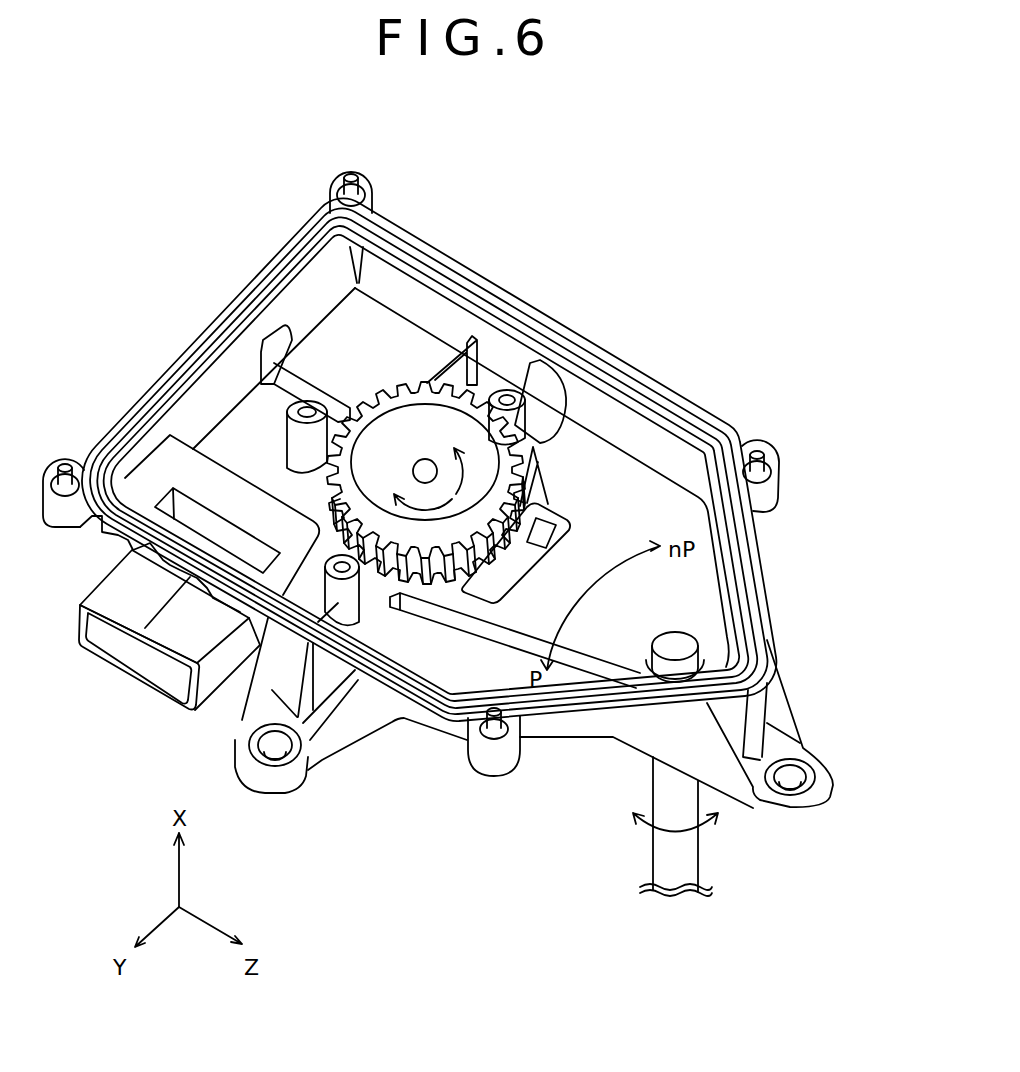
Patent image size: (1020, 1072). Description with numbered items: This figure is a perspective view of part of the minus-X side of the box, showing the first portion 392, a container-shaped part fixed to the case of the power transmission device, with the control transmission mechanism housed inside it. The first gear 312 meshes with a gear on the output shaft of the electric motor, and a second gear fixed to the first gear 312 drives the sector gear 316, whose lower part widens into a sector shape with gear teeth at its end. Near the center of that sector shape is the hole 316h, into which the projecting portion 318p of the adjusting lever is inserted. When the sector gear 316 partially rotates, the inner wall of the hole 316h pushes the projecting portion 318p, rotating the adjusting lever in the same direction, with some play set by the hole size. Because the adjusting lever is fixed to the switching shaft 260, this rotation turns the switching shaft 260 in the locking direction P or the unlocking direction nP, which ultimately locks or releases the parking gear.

The first gear 312 is at (467, 403).
The sector gear 316 is at (600, 620).
The hole 316h is at (548, 522).
The projecting portion 318p is at (535, 450).
The first portion 392 is at (121, 418).
The switching shaft 260 is at (660, 849).